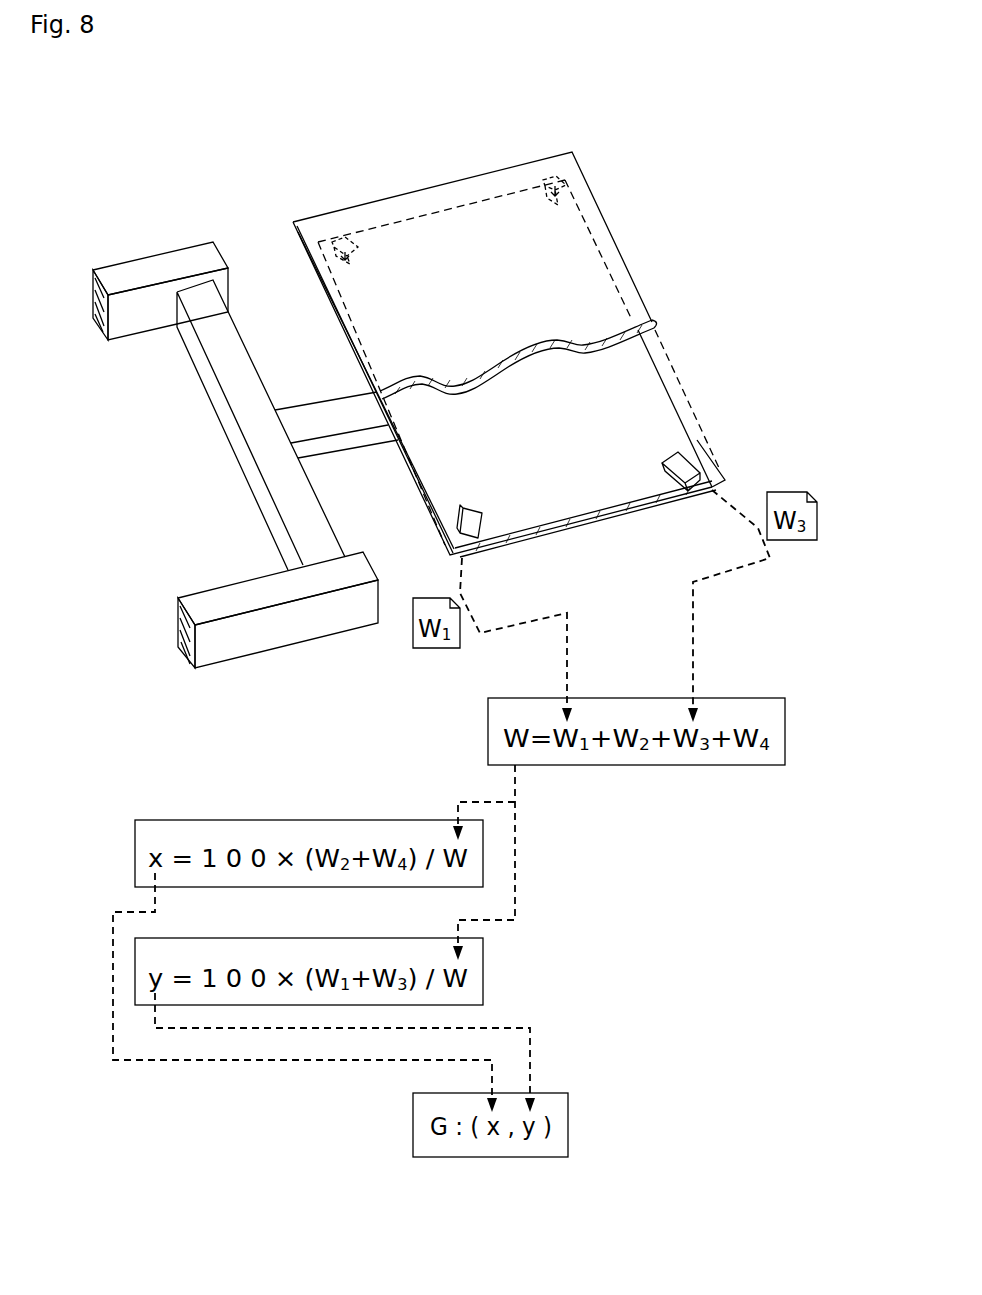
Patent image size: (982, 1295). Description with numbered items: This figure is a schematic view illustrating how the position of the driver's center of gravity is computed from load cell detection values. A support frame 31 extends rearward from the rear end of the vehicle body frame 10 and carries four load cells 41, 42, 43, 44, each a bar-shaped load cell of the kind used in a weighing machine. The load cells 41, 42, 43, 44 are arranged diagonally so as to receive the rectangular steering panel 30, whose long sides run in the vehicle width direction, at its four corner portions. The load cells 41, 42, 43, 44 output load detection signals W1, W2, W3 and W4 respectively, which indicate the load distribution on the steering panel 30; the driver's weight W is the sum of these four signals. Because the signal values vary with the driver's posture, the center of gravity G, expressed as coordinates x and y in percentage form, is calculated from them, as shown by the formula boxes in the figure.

The vehicle body frame 10 is at (140, 267).
The steering panel 30 is at (625, 280).
The support frame 31 is at (343, 447).
The load cell 41 is at (470, 518).
The load cell 42 is at (345, 238).
The load cell 43 is at (683, 465).
The load cell 44 is at (554, 176).